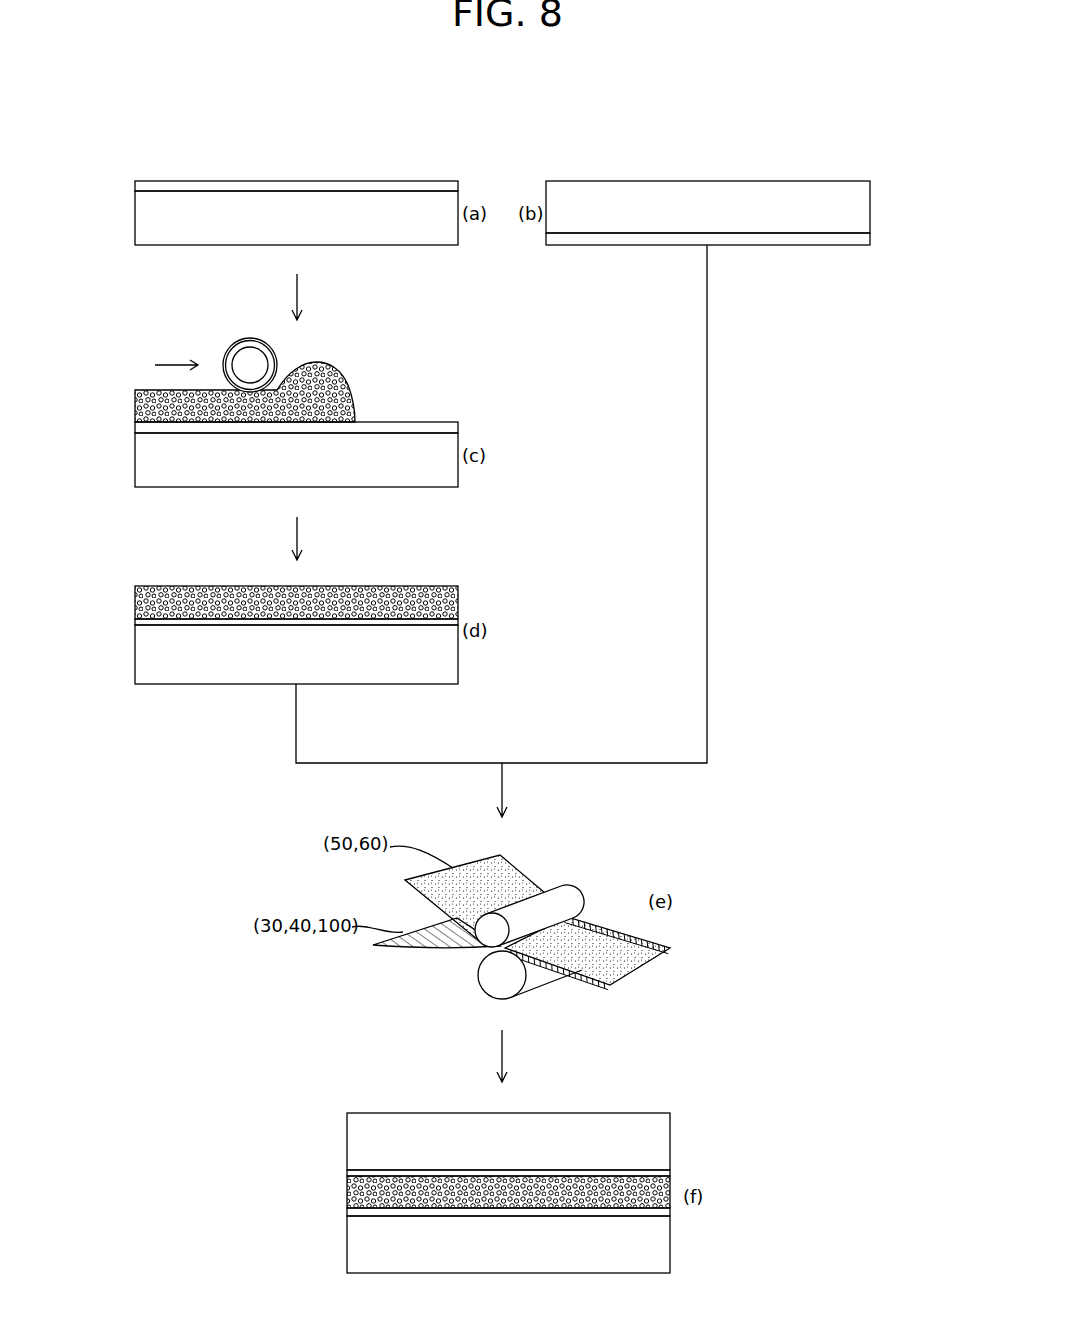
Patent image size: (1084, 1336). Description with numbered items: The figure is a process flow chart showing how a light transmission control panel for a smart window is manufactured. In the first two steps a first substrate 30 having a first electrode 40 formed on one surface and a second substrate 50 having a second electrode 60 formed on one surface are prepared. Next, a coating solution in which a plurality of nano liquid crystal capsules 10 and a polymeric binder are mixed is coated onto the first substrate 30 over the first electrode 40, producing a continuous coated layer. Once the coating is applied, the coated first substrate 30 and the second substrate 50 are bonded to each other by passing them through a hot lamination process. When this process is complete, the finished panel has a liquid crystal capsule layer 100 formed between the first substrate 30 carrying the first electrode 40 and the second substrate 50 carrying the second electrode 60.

The nano liquid crystal capsules 10 is at (137, 396).
The first substrate 30 is at (137, 215).
The first electrode 40 is at (137, 185).
The second substrate 50 is at (870, 209).
The second electrode 60 is at (870, 240).
The liquid crystal capsule layer 100 is at (346, 367).